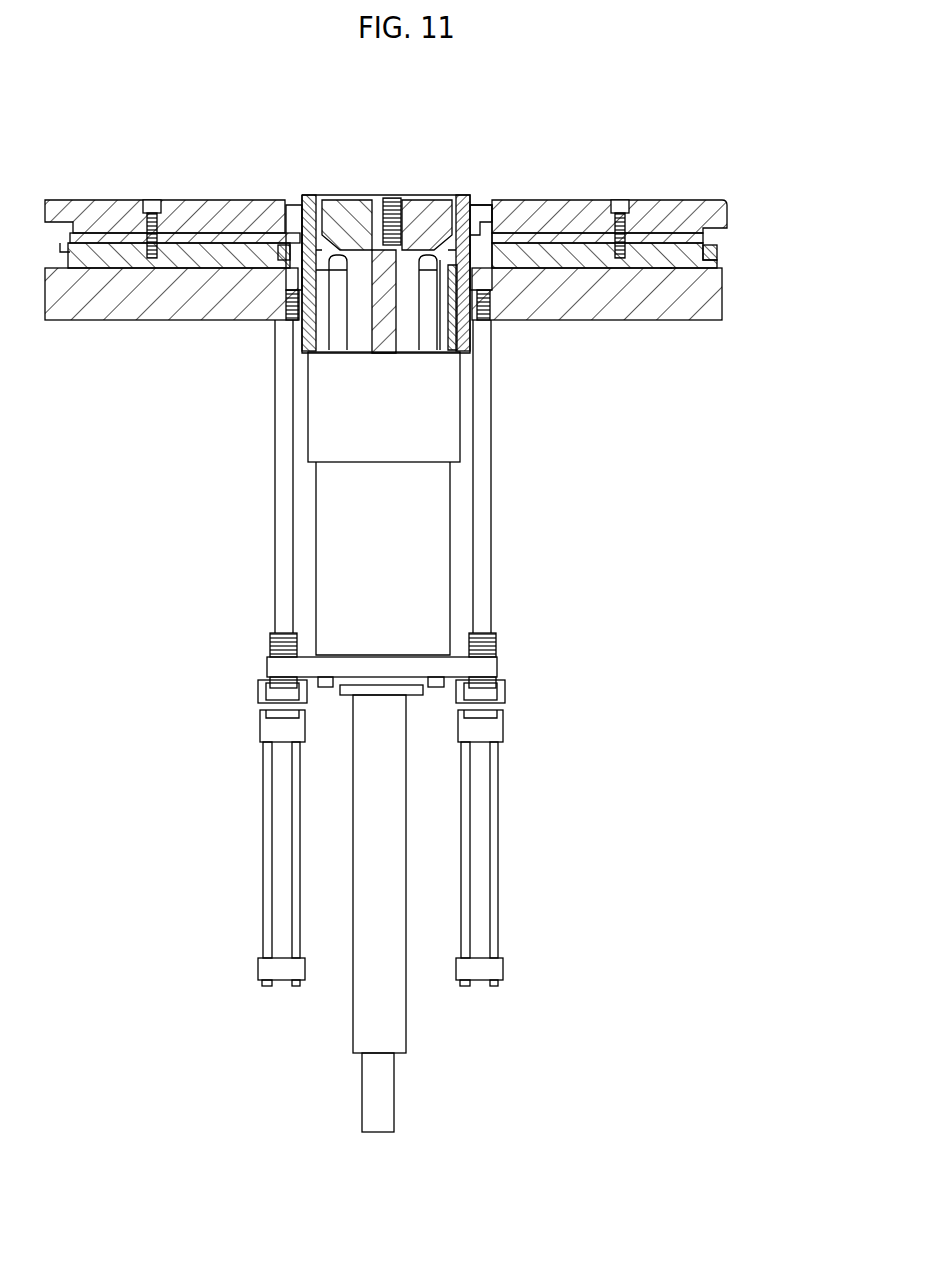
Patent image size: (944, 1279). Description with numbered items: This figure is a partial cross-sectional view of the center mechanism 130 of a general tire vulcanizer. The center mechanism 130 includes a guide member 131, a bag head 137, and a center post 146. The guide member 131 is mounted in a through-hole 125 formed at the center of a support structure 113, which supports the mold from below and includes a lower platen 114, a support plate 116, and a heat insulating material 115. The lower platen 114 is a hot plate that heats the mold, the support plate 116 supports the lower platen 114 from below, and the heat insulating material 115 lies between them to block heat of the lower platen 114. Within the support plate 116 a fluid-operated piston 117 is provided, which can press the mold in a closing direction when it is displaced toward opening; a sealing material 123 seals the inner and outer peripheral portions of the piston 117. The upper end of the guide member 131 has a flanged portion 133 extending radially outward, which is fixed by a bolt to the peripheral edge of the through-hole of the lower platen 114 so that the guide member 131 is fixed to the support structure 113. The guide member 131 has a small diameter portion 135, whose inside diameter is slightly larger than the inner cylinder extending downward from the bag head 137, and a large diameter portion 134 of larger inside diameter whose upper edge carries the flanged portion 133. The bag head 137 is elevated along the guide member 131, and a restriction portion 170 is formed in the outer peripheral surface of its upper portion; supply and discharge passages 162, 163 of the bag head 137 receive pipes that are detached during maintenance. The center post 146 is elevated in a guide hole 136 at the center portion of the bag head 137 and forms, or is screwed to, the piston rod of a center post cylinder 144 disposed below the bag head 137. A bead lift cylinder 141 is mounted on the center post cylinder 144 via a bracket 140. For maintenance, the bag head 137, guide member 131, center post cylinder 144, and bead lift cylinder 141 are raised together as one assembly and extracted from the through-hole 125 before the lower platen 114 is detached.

The support structure 113 is at (697, 192).
The lower platen 114 is at (710, 206).
The heat insulating material 115 is at (700, 238).
The support plate 116 is at (705, 296).
The piston 117 is at (666, 268).
The sealing material 123 is at (720, 262).
The through-hole 125 is at (292, 332).
The center mechanism 130 is at (437, 177).
The guide member 131 is at (477, 355).
The flanged portion 133 is at (492, 200).
The large diameter portion 134 is at (508, 206).
The small diameter portion 135 is at (452, 432).
The guide hole 136 is at (360, 196).
The bag head 137 is at (410, 196).
The bracket 140 is at (268, 662).
The bead lift cylinder 141 is at (265, 782).
The center post cylinder 144 is at (385, 1018).
The center post 146 is at (406, 352).
The supply and discharge passage 162 is at (433, 343).
The supply and discharge passage 163 is at (355, 352).
The restriction portion 170 is at (463, 340).